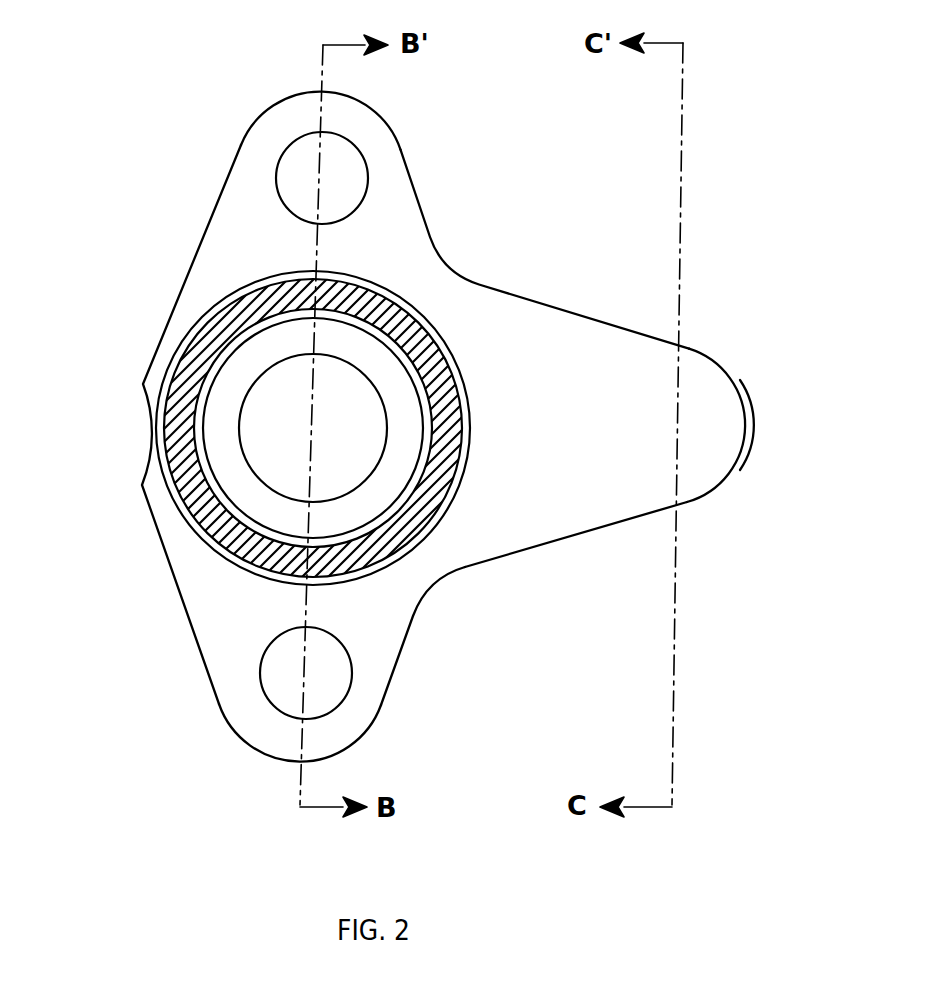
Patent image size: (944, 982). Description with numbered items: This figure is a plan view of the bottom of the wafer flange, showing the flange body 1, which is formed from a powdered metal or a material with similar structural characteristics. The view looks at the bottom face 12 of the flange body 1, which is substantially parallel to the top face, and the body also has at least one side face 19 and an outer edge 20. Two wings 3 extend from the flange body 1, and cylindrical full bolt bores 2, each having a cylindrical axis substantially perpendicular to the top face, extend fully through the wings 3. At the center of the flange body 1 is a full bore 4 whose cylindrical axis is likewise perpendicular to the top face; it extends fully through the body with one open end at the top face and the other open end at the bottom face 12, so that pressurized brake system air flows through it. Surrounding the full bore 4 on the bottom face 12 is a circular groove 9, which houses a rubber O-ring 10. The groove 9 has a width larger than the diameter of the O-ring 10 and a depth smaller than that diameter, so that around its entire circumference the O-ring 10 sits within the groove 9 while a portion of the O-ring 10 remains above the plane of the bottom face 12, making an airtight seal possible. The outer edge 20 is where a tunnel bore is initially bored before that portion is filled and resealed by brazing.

The flange body 1 is at (410, 252).
The full bolt bores 2 is at (345, 173).
The wings 3 is at (285, 128).
The full bore 4 is at (297, 410).
The circular groove 9 is at (163, 485).
The rubber O-ring 10 is at (198, 510).
The bottom face 12 is at (635, 477).
The side face 19 is at (567, 538).
The outer edge 20 is at (747, 427).